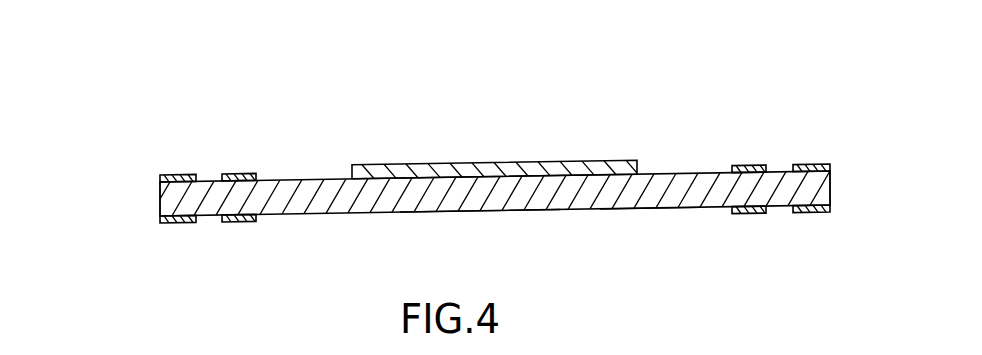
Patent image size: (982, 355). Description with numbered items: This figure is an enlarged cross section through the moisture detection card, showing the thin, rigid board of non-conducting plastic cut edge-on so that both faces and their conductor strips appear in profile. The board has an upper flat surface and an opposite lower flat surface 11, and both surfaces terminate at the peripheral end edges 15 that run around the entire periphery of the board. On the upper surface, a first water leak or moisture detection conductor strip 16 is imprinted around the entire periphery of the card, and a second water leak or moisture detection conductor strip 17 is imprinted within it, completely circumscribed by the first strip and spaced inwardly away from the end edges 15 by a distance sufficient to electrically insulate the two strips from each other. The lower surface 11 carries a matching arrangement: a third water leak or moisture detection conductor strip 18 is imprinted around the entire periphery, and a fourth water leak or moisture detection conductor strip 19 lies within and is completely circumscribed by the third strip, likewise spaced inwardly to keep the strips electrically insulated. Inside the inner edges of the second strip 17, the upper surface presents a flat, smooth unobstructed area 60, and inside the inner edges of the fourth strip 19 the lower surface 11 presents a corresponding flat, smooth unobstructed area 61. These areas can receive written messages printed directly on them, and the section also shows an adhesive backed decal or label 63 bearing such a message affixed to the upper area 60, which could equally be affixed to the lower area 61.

The lower flat surface 11 is at (625, 208).
The end edges 15 is at (160, 203).
The first water leak or moisture detection conductor strip 16 is at (175, 175).
The second water leak or moisture detection conductor strip 17 is at (232, 174).
The third water leak or moisture detection conductor strip 18 is at (185, 223).
The fourth water leak or moisture detection conductor strip 19 is at (237, 222).
The flat, smooth unobstructed area 60 is at (300, 182).
The flat, smooth unobstructed area 61 is at (483, 210).
The adhesive backed decals or labels 63 is at (535, 165).